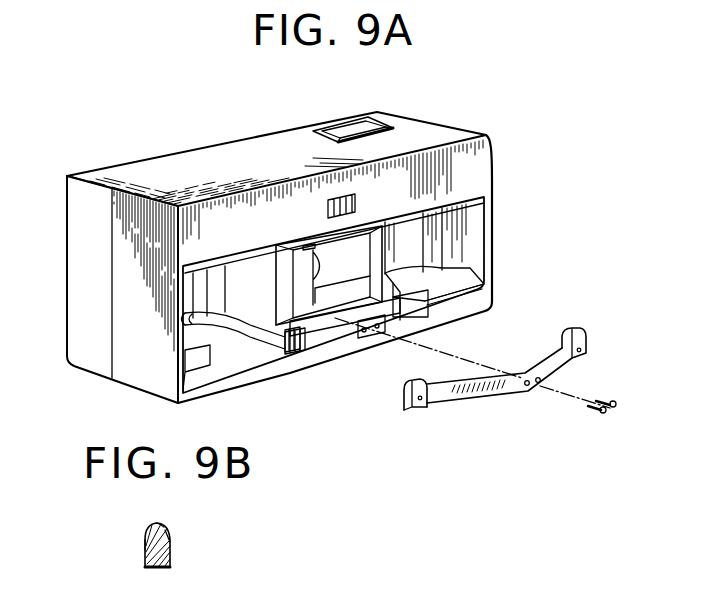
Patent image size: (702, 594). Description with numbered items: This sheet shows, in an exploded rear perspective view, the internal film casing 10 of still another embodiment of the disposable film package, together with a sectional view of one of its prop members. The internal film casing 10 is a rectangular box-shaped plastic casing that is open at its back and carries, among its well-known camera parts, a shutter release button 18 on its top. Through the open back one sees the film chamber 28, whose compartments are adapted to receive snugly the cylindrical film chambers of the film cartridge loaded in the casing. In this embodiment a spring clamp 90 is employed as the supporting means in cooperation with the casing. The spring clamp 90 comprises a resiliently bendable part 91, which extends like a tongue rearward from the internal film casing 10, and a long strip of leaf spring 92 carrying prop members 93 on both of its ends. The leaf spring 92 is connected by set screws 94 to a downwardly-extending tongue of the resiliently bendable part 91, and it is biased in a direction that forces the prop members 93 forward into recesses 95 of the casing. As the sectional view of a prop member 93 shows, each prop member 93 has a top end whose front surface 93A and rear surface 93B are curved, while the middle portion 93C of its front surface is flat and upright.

In FIG. 9A, the internal film casing 10 is at (353, 265).
In FIG. 9A, the shutter release button 18 is at (345, 132).
In FIG. 9A, the film chamber 28 is at (476, 242).
In FIG. 9A, the spring clamp 90 is at (487, 358).
In FIG. 9A, the resiliently bendable part 91 is at (352, 316).
In FIG. 9A, the leaf spring 92 is at (460, 399).
In FIG. 9A, the prop member 93 is at (410, 410).
In FIG. 9B, the prop member 93 is at (159, 550).
In FIG. 9B, the front surface 93A is at (147, 530).
In FIG. 9B, the rear surface 93B is at (168, 528).
In FIG. 9B, the middle portion 93C is at (145, 543).
In FIG. 9A, the set screws 94 is at (610, 401).
In FIG. 9A, the recesses 95 is at (293, 346).